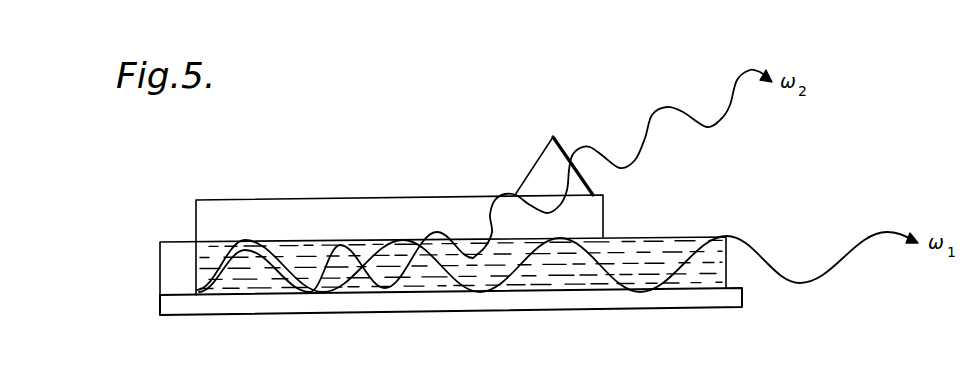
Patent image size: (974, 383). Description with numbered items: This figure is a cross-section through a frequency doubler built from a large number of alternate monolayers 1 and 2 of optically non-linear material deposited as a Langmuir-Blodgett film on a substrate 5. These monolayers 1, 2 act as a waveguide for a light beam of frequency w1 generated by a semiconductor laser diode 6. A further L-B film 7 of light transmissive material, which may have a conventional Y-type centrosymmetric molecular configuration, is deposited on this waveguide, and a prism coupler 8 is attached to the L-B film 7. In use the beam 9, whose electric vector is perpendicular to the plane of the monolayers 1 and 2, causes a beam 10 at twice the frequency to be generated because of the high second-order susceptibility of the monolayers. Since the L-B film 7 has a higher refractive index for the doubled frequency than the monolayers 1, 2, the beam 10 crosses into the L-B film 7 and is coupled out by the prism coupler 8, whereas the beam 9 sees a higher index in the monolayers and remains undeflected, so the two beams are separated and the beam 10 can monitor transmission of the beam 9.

The monolayer 1 is at (647, 240).
The monolayer 2 is at (562, 250).
The substrate 5 is at (430, 306).
The semiconductor laser diode 6 is at (168, 266).
The L-B film 7 is at (265, 207).
The prism coupler 8 is at (547, 157).
The beam 9 is at (828, 272).
The beam 10 is at (647, 118).